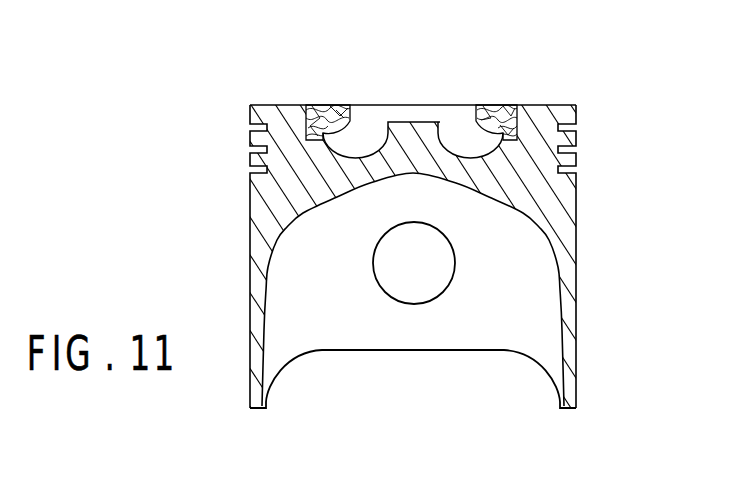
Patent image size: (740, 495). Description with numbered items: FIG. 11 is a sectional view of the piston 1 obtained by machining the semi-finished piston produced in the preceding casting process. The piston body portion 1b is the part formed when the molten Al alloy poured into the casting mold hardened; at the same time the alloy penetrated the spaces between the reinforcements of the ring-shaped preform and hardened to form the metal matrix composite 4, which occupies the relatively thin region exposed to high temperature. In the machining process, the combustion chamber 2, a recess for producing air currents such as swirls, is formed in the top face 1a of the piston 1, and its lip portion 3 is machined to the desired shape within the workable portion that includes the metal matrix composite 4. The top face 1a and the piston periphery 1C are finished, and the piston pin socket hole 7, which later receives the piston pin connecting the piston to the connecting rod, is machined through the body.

The piston 1 is at (395, 227).
The top face 1a is at (268, 105).
The piston body portion 1b is at (262, 213).
The piston periphery 1C is at (577, 258).
The combustion chamber 2 is at (360, 138).
The lip portion 3 is at (473, 88).
The metal matrix composite 4 is at (508, 105).
The piston pin socket hole 7 is at (442, 287).